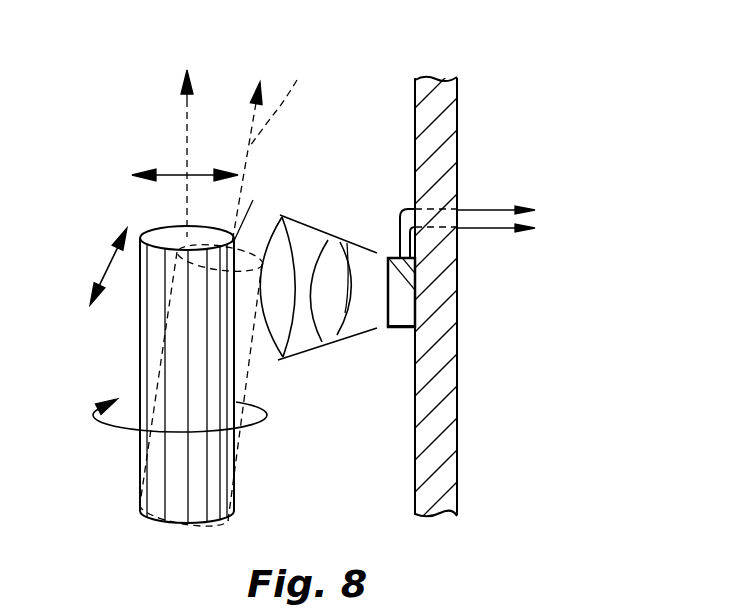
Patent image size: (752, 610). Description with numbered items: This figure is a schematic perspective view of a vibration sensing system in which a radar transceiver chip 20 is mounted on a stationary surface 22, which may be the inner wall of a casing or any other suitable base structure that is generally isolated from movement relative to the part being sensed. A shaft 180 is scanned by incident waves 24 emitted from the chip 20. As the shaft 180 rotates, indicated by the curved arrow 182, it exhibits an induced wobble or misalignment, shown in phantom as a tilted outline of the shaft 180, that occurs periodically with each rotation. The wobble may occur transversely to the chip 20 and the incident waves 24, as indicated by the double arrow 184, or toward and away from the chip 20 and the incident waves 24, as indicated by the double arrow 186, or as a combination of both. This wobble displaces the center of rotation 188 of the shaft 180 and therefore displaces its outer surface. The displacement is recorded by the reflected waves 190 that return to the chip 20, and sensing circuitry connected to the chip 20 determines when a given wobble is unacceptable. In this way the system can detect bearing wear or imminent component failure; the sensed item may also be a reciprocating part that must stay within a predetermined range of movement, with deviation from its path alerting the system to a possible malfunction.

The chip 20 is at (388, 257).
The stationary surface 22 is at (415, 447).
The incident waves 24 is at (318, 343).
The shaft 180 is at (143, 312).
The curved arrow 182 is at (118, 430).
The double arrow 184 is at (105, 262).
The double arrow 186 is at (172, 175).
The center of rotation 188 is at (190, 117).
The reflected waves 190 is at (283, 357).